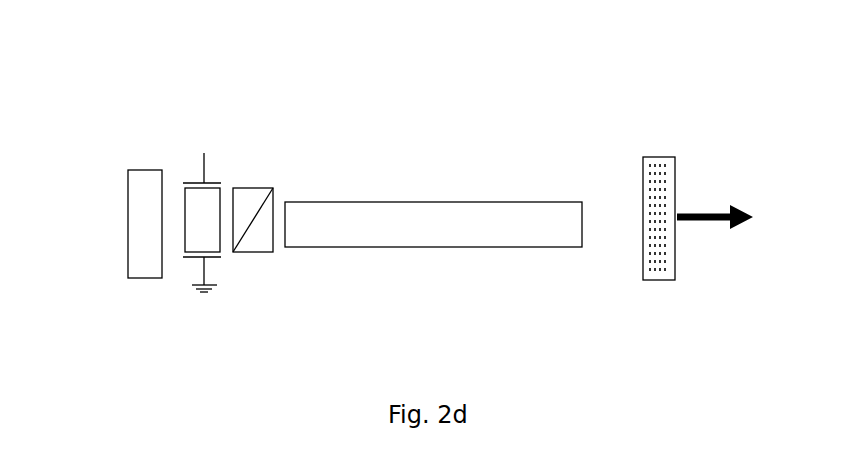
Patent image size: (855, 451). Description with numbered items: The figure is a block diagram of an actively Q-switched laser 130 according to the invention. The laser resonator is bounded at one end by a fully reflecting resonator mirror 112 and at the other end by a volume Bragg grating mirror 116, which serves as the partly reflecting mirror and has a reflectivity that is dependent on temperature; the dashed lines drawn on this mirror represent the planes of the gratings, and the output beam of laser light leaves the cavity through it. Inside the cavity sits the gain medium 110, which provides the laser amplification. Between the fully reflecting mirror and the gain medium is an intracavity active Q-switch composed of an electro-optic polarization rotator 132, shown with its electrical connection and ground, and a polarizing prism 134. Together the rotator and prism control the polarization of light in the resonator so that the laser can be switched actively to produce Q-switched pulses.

The gain medium 110 is at (433, 224).
The 100% reflecting mirror 112 is at (120, 176).
The volume Bragg grating mirror 116 is at (640, 155).
The actively Q-switched laser 130 is at (435, 76).
The electro-optic polarization rotator 132 is at (191, 157).
The polarizing prism 134 is at (281, 172).